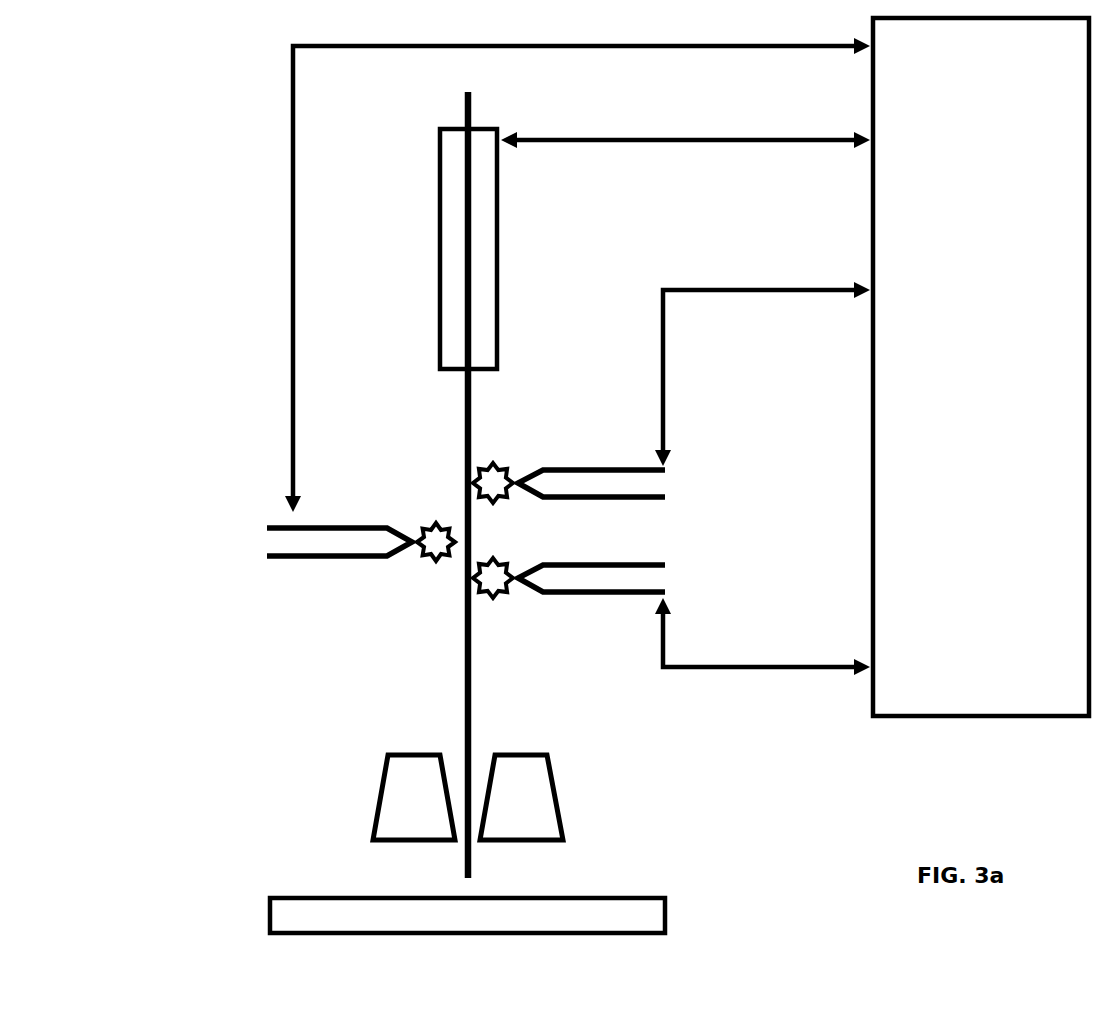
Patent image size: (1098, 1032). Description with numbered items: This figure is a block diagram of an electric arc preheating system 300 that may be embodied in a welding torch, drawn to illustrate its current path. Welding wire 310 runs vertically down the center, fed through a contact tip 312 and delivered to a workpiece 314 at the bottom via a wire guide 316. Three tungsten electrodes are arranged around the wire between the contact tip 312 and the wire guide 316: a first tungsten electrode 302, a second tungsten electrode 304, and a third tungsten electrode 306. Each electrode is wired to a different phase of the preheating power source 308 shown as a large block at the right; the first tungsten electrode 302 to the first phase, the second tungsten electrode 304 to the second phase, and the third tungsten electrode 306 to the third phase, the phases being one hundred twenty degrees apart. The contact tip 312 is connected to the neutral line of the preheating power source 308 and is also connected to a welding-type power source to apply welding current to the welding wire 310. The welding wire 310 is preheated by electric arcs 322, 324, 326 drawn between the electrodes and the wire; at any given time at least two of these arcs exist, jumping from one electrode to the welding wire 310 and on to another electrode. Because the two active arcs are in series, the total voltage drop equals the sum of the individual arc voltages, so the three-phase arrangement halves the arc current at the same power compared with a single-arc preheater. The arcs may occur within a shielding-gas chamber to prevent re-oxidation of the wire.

The electric arc preheating system 300 is at (165, 131).
The first tungsten electrode 302 is at (597, 597).
The second tungsten electrode 304 is at (268, 527).
The third tungsten electrode 306 is at (627, 468).
The preheating power source 308 is at (981, 367).
The welding wire 310 is at (463, 467).
The contact tip 312 is at (497, 245).
The workpiece 314 is at (270, 915).
The wire guide 316 is at (375, 808).
The electric arc 322 is at (498, 595).
The electric arc 324 is at (437, 562).
The electric arc 326 is at (491, 465).